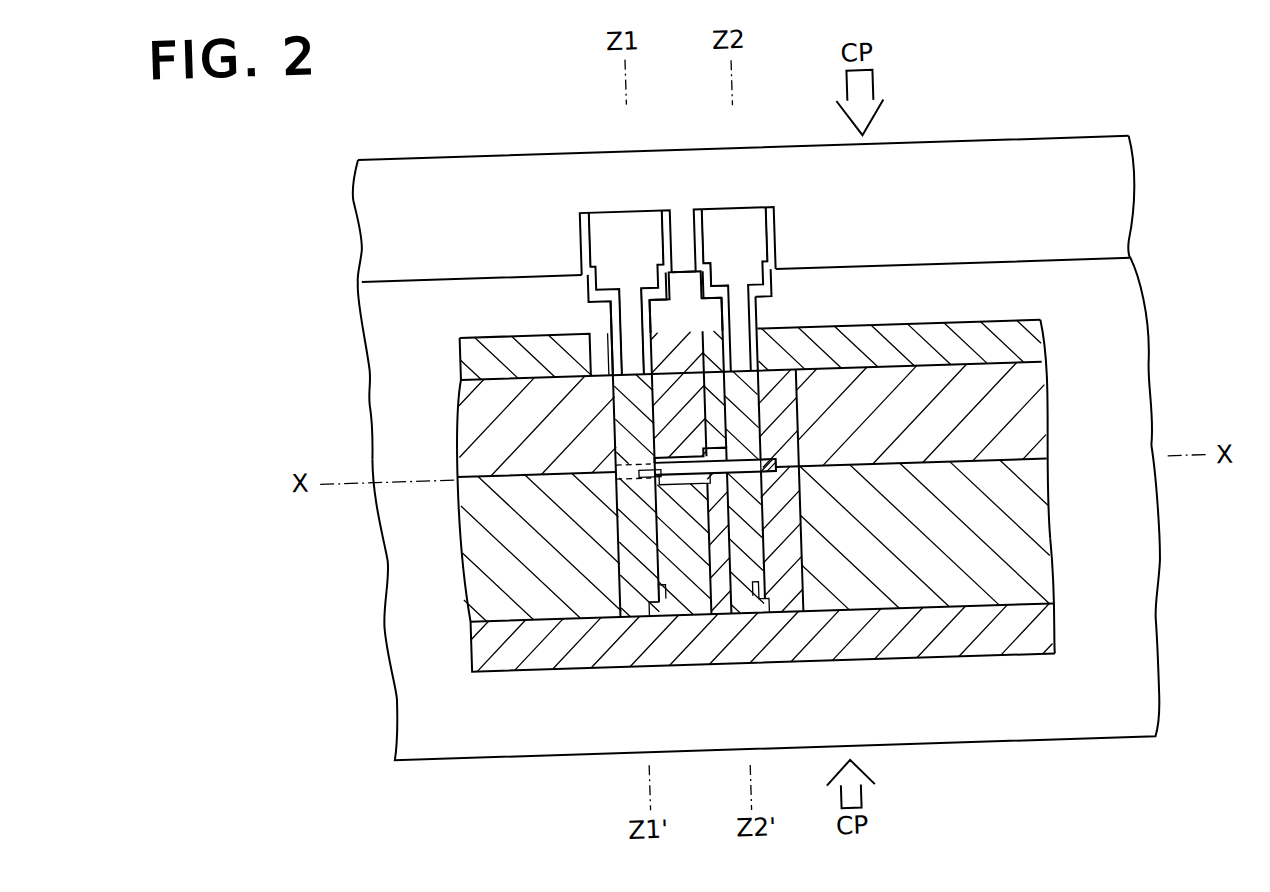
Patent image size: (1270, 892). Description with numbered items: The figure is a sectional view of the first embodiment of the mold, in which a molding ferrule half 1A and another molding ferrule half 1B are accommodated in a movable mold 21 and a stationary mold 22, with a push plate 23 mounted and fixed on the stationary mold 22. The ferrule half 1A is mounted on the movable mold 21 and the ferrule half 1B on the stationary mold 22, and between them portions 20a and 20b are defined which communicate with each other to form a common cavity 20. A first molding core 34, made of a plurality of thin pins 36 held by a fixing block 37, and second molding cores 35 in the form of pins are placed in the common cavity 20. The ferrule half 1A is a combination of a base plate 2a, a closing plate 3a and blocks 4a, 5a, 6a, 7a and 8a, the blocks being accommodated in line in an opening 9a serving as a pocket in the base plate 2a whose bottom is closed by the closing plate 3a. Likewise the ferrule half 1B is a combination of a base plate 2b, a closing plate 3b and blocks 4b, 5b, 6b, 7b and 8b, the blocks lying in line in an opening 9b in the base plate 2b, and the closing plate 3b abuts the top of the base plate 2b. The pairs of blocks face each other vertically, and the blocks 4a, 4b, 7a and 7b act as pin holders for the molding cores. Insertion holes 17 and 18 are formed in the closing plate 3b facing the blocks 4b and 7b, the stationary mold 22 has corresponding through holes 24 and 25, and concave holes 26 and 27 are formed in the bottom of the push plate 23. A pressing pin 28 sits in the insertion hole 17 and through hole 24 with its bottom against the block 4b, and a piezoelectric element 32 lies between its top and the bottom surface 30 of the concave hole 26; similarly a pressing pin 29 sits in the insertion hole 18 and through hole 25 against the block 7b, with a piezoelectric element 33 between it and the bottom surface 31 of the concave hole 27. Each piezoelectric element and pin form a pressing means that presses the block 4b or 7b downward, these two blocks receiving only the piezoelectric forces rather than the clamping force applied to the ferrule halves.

The push plate 23 is at (1118, 229).
The stationary mold 22 is at (1152, 423).
The movable mold 21 is at (1145, 647).
The another molding ferrule half 1B is at (1050, 414).
The molding ferrule half 1A is at (1040, 593).
The mold component (base plate) 2b is at (452, 410).
The mold component (base plate) 2a is at (1024, 526).
The mold component (closing plate) 3b is at (490, 355).
The mold component (closing plate) 3a is at (856, 664).
The opening 9b is at (786, 442).
The opening 9a is at (698, 488).
The mold component (block) 4b is at (612, 392).
The mold component (block) 5b is at (666, 380).
The mold component (block) 6b is at (708, 380).
The mold component (block) 7b is at (757, 395).
The mold component (block) 8b is at (790, 445).
The mold component (block) 4a is at (646, 575).
The mold component (block) 5a is at (681, 500).
The mold component (block) 6a is at (718, 585).
The mold component (block) 7a is at (730, 594).
The mold component (block) 8a is at (764, 585).
The insertion hole 17 is at (604, 347).
The through hole 24 is at (584, 300).
The concave hole 26 is at (578, 235).
The bottom surface of concave hole 30 is at (590, 228).
The piezoelectric element 32 is at (624, 240).
The pressing pin 28 is at (620, 300).
The pressing pin 29 is at (748, 240).
The bottom surface of concave hole 31 is at (712, 228).
The piezoelectric element 33 is at (724, 240).
The concave hole 27 is at (772, 232).
The through hole 25 is at (737, 362).
The insertion hole 18 is at (751, 375).
The common cavity 20 is at (645, 475).
The portion 20b is at (718, 462).
The portion 20a is at (668, 560).
The first molding core 34 is at (651, 568).
The second molding core 35 is at (712, 578).
The pin 36 is at (686, 482).
The fixing block 37 is at (790, 600).